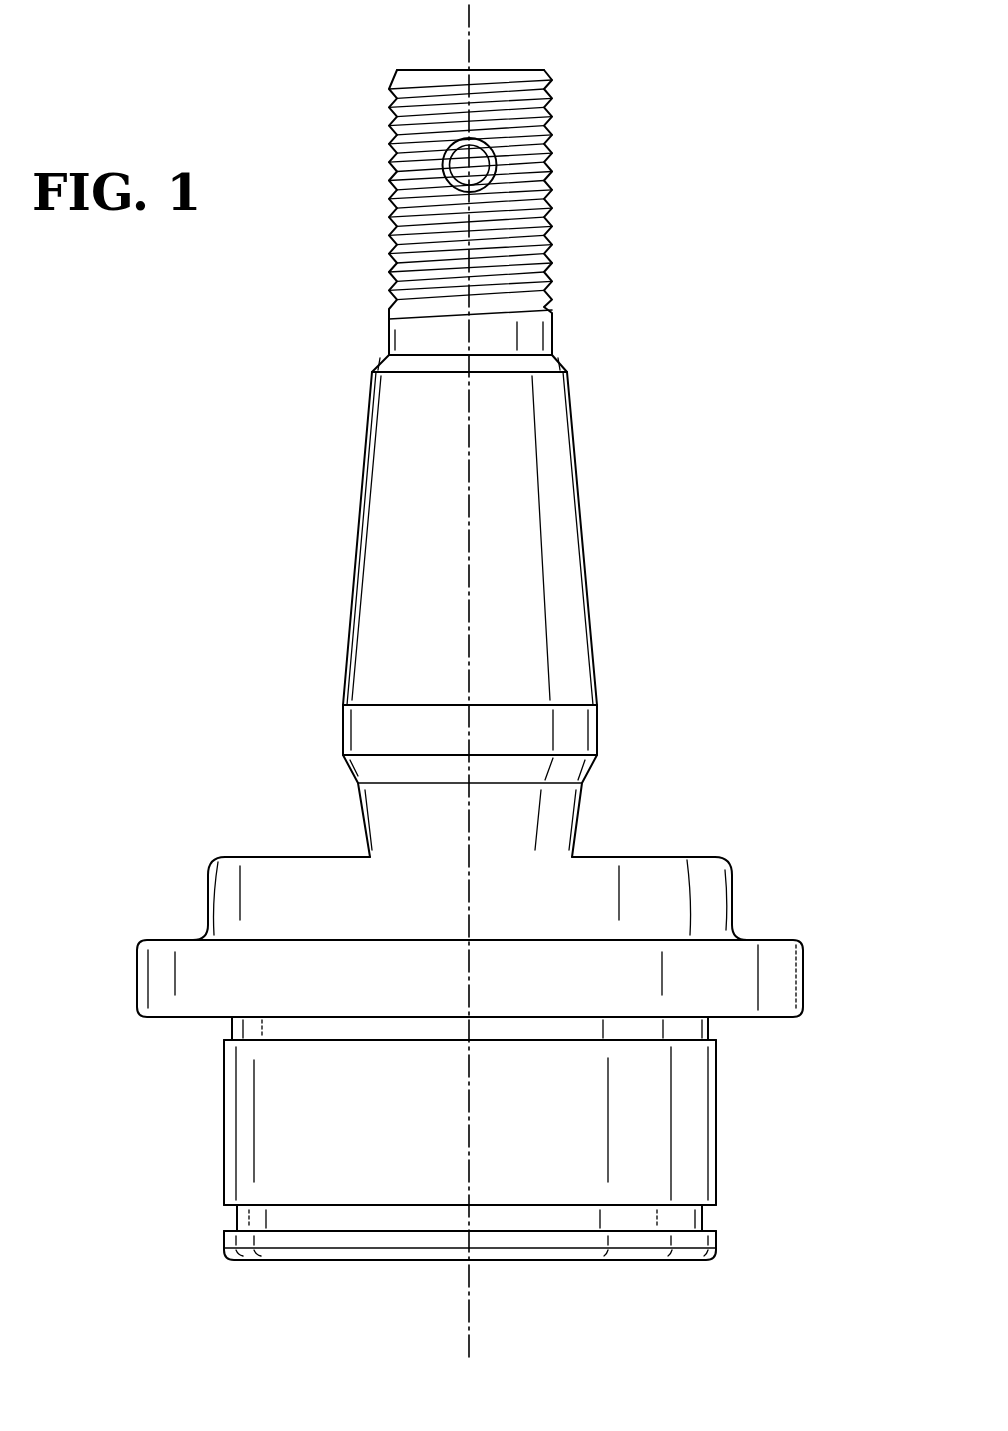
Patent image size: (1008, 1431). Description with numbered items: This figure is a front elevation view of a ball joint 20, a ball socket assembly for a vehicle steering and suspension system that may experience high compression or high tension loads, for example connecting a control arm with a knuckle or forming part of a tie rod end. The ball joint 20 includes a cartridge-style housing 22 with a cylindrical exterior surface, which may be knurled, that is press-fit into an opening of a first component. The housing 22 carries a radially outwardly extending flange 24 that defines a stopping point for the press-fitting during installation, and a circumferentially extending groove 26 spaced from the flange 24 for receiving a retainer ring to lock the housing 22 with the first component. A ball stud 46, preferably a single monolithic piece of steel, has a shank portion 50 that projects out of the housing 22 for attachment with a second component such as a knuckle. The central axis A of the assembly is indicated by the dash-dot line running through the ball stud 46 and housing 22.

The ball joint 20 is at (684, 278).
The housing 22 is at (717, 1118).
The flange 24 is at (784, 977).
The groove 26 is at (703, 1215).
The ball stud 46 is at (580, 496).
The shank portion 50 is at (397, 552).
The central axis A is at (470, 36).